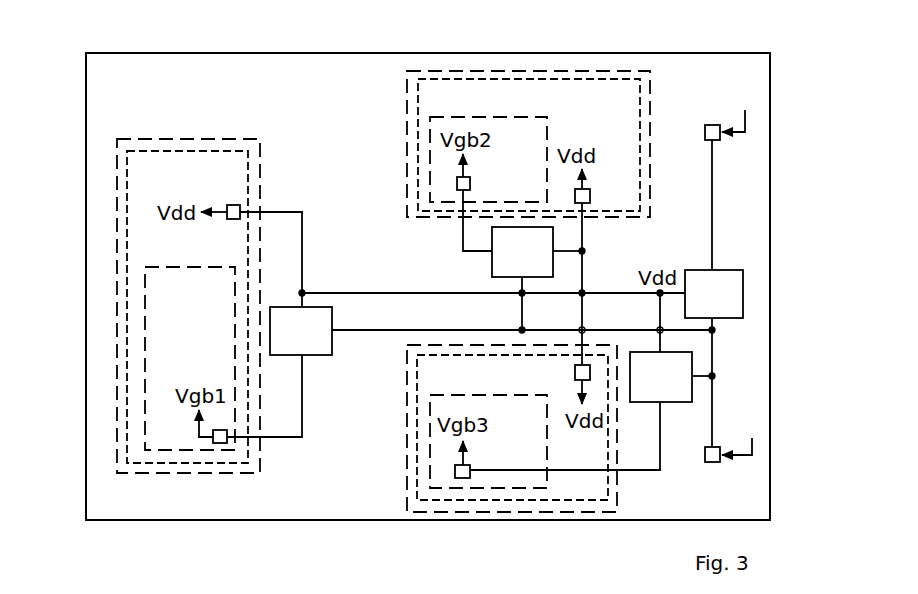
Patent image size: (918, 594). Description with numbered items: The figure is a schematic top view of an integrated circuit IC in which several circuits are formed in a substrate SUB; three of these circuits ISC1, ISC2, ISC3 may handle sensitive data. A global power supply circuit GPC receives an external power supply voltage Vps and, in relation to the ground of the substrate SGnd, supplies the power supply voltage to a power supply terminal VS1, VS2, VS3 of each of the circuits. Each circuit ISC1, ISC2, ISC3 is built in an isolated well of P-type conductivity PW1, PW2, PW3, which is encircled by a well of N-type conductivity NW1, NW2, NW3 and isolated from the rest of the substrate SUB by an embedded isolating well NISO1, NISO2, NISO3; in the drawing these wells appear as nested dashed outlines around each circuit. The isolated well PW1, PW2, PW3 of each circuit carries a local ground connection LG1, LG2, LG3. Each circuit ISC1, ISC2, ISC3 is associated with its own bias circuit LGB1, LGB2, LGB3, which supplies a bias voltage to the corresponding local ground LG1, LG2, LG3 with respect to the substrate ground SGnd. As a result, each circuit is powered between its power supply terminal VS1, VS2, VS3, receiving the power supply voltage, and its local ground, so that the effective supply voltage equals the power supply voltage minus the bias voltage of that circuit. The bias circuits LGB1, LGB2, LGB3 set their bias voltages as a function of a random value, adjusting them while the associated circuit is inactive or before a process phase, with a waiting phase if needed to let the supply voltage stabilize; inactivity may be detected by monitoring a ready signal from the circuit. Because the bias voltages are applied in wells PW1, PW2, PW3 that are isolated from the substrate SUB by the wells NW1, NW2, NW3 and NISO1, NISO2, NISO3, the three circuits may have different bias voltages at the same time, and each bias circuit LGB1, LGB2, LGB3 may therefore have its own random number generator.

The integrated circuit IC is at (95, 521).
The substrate SUB is at (138, 510).
The embedded isolating well NISO1 is at (261, 143).
The well of N-type conductivity NW1 is at (249, 170).
The isolated well of P-type conductivity PW1 is at (205, 451).
The circuit ISC1 is at (213, 185).
The power supply terminal VS1 is at (241, 207).
The local ground connection LG1 is at (228, 441).
The bias circuit LGB1 is at (328, 341).
The embedded isolating well NISO2 is at (407, 95).
The well of N-type conductivity NW2 is at (418, 149).
The isolated well of P-type conductivity PW2 is at (430, 172).
The circuit ISC2 is at (552, 103).
The power supply terminal VS2 is at (590, 204).
The local ground connection LG2 is at (458, 191).
The bias circuit LGB2 is at (549, 261).
The embedded isolating well NISO3 is at (407, 393).
The well of N-type conductivity NW3 is at (417, 430).
The isolated well of P-type conductivity PW3 is at (430, 458).
The circuit ISC3 is at (475, 380).
The power supply terminal VS3 is at (591, 366).
The local ground connection LG3 is at (455, 475).
The bias circuit LGB3 is at (689, 386).
The global power supply circuit GPC is at (738, 308).
The external power supply voltage Vps is at (709, 125).
The ground of the substrate SGnd is at (712, 462).